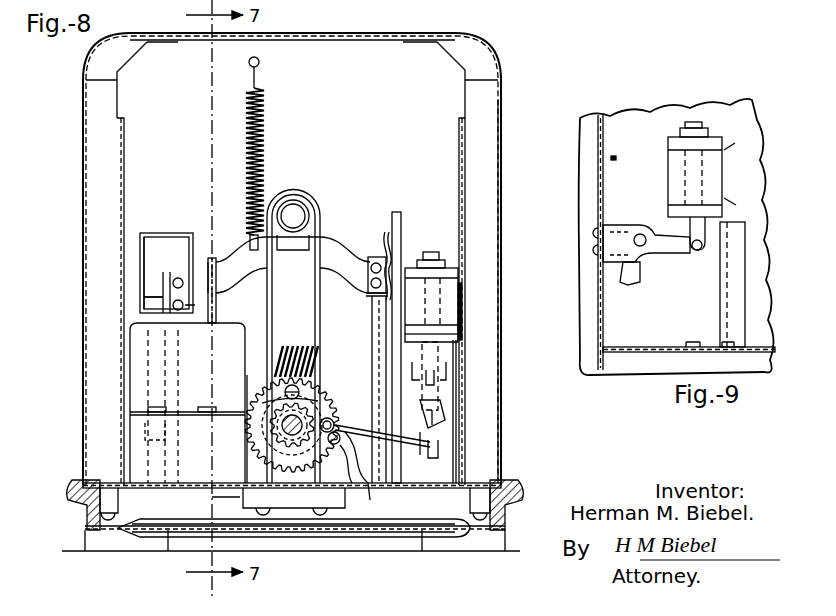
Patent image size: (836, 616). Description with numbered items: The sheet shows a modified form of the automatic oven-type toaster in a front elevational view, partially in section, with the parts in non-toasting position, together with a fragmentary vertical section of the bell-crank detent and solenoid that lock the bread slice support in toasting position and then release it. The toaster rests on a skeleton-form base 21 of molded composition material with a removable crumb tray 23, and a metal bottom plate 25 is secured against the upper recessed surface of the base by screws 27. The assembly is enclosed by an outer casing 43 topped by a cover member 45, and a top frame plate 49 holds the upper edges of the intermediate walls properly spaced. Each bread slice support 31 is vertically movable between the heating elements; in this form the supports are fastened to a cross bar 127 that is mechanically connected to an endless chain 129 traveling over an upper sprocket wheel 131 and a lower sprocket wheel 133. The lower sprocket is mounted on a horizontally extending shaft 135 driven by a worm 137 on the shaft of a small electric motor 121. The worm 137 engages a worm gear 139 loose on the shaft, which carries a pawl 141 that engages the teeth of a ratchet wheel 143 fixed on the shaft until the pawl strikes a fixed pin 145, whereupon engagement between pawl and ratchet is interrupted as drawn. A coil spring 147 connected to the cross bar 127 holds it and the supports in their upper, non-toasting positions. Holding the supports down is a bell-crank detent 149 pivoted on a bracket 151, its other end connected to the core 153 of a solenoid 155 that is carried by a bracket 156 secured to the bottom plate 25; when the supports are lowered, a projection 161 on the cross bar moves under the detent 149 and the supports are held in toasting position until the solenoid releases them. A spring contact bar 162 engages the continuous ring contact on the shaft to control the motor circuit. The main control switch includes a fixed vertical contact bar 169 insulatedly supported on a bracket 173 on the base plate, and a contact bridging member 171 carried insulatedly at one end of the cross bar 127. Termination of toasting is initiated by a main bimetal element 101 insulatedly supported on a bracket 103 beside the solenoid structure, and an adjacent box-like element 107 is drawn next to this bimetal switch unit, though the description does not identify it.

In FIG. 8, the base 21 is at (80, 500).
In FIG. 8, the crumb tray 23 is at (130, 533).
In FIG. 8, the bottom plate 25 is at (484, 484).
In FIG. 9, the bottom plate 25 is at (605, 347).
In FIG. 8, the screws 27 is at (505, 518).
In FIG. 8, the bread slice support 31 is at (212, 258).
In FIG. 8, the outer casing 43 is at (499, 156).
In FIG. 8, the cover member 45 is at (490, 55).
In FIG. 8, the top frame plate 49 is at (300, 40).
In FIG. 8, the main bimetal element 101 is at (152, 302).
In FIG. 8, the bracket 103 is at (152, 316).
In FIG. 8, the switch box 107 is at (158, 252).
In FIG. 8, the electric motor 121 is at (134, 338).
In FIG. 8, the cross bar 127 is at (343, 237).
In FIG. 8, the endless chain 129 is at (267, 298).
In FIG. 8, the upper sprocket wheel 131 is at (297, 190).
In FIG. 8, the lower sprocket wheel 133 is at (262, 447).
In FIG. 8, the shaft 135 is at (262, 404).
In FIG. 8, the worm 137 is at (293, 344).
In FIG. 8, the worm gear 139 is at (318, 387).
In FIG. 8, the pawl 141 is at (333, 412).
In FIG. 8, the ratchet wheel 143 is at (270, 433).
In FIG. 8, the pin 145 is at (365, 475).
In FIG. 8, the coil spring 147 is at (266, 102).
In FIG. 8, the detent 149 is at (393, 430).
In FIG. 9, the detent 149 is at (640, 286).
In FIG. 8, the bracket 151 is at (477, 367).
In FIG. 9, the bracket 151 is at (620, 233).
In FIG. 8, the core 153 is at (443, 332).
In FIG. 9, the core 153 is at (706, 228).
In FIG. 8, the solenoid 155 is at (450, 297).
In FIG. 9, the solenoid 155 is at (718, 178).
In FIG. 8, the bracket 156 is at (447, 452).
In FIG. 9, the bracket 156 is at (742, 298).
In FIG. 8, the projection 161 is at (368, 294).
In FIG. 9, the projection 161 is at (616, 156).
In FIG. 8, the spring contact bar 162 is at (348, 428).
In FIG. 8, the contact bar 169 is at (389, 331).
In FIG. 8, the contact bridging member 171 is at (385, 232).
In FIG. 8, the bracket 173 is at (415, 233).